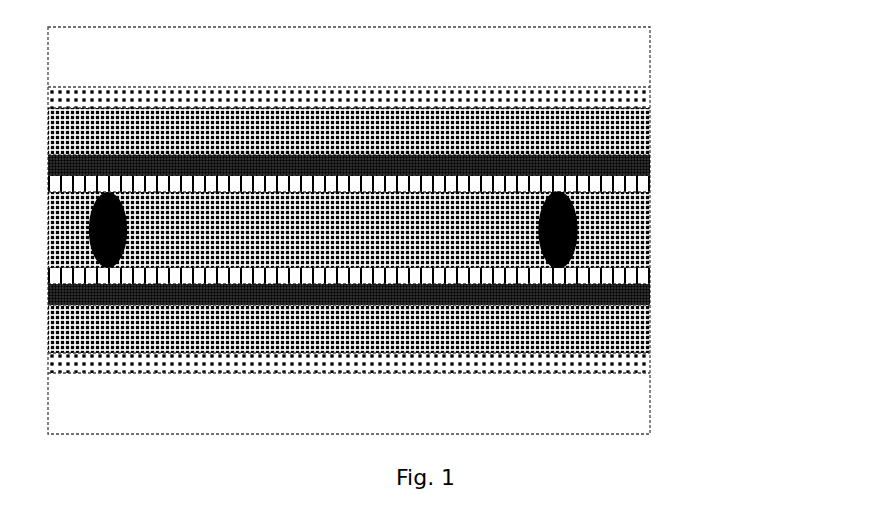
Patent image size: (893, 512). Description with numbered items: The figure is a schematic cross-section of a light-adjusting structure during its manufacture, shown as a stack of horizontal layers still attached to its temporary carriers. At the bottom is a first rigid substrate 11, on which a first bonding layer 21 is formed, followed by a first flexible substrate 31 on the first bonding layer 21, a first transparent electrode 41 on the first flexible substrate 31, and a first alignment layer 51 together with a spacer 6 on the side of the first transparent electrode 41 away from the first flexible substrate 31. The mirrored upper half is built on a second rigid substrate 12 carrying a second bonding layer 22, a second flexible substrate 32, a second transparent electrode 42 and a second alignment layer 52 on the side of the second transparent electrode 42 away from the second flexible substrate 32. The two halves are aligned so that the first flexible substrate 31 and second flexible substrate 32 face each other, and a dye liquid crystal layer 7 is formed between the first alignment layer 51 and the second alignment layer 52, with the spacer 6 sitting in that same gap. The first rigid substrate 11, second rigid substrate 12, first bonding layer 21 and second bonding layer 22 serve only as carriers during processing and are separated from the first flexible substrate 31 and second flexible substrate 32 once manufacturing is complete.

The first rigid substrate 11 is at (650, 398).
The second rigid substrate 12 is at (650, 59).
The first bonding layer 21 is at (650, 356).
The second bonding layer 22 is at (650, 97).
The first flexible substrate 31 is at (650, 323).
The second flexible substrate 32 is at (650, 130).
The first transparent electrode 41 is at (650, 284).
The second transparent electrode 42 is at (650, 173).
The first alignment layer 51 is at (650, 270).
The second alignment layer 52 is at (650, 192).
The spacer 6 is at (577, 223).
The dye liquid crystal layer 7 is at (630, 248).